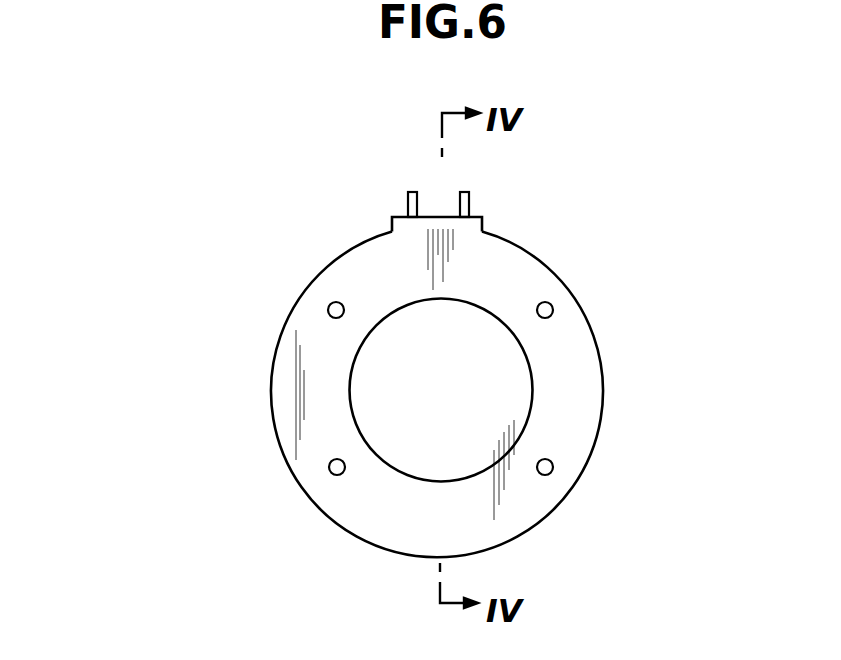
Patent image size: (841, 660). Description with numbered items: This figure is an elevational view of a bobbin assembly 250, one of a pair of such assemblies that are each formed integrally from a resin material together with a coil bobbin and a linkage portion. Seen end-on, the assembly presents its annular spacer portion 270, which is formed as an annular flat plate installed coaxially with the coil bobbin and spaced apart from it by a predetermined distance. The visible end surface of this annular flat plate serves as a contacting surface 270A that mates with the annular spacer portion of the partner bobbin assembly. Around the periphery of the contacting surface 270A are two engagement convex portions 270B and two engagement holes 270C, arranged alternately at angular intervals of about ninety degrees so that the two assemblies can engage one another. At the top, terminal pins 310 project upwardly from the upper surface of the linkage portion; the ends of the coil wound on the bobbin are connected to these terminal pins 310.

The bobbin assembly 250 is at (330, 236).
The annular spacer portion 270 is at (380, 544).
The contacting surface 270A is at (587, 397).
The engagement convex portions 270B is at (330, 310).
The engagement holes 270C is at (552, 310).
The terminal pin 310 is at (422, 197).